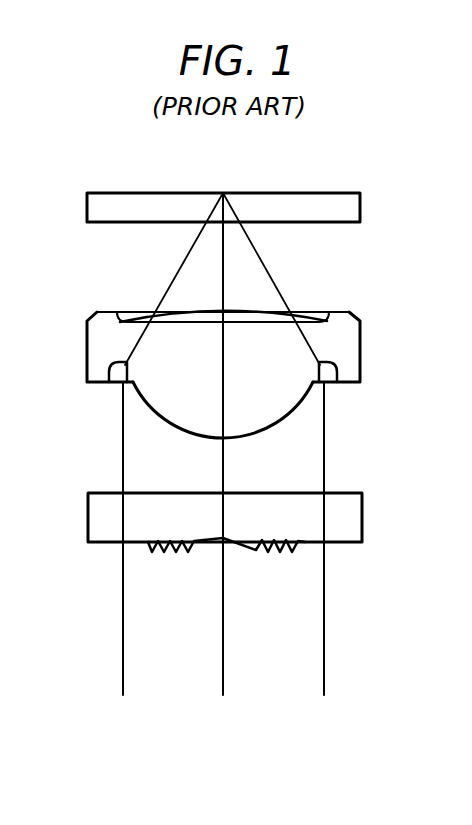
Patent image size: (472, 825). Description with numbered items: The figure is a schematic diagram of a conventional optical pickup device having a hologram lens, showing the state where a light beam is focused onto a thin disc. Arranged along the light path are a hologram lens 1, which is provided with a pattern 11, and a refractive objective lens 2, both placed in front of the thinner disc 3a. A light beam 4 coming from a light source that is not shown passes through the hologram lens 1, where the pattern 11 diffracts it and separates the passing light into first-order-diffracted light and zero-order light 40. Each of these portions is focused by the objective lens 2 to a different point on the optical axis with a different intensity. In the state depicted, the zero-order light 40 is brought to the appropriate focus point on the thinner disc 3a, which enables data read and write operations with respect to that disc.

The thinner disc 3a is at (100, 202).
The refractive objective lens 2 is at (95, 352).
The zero-order light 40 is at (123, 462).
The hologram lens 1 is at (100, 522).
The pattern 11 is at (306, 562).
The light beam 4 is at (123, 718).